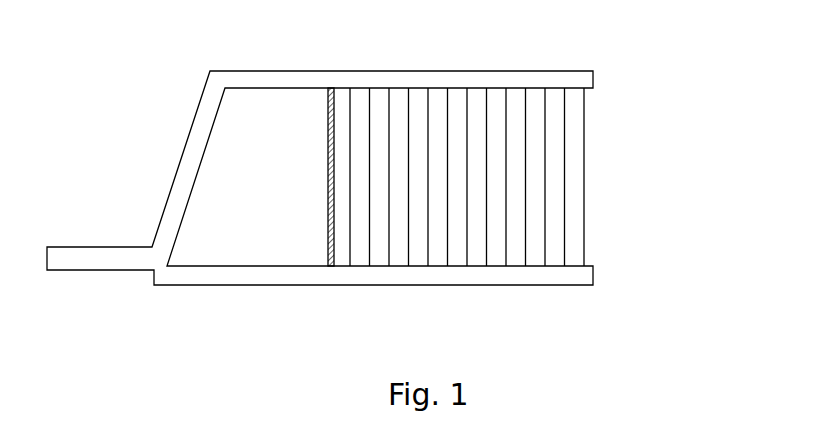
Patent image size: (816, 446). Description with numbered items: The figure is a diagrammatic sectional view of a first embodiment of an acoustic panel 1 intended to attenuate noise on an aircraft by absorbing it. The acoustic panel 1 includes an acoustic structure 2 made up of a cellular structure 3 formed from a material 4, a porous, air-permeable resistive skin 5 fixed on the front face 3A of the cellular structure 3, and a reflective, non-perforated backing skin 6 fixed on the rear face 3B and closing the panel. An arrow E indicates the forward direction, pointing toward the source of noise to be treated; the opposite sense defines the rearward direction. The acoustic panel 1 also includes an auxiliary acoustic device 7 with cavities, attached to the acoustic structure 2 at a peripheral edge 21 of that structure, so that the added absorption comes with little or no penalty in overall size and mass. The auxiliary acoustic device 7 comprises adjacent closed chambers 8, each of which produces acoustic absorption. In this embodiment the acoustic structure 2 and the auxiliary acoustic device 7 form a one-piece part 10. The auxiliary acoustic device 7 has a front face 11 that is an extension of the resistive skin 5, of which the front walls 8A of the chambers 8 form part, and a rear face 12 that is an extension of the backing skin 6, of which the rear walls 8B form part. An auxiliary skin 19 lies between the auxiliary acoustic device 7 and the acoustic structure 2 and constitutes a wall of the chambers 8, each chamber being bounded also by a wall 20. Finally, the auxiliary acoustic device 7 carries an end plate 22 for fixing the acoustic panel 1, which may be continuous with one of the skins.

The acoustic panel 1 is at (104, 90).
The acoustic structure 2 is at (555, 58).
The cellular structure 3 is at (557, 153).
The front face 3A is at (595, 263).
The rear face 3B is at (593, 92).
The material 4 is at (575, 198).
The resistive skin 5 is at (465, 275).
The backing skin 6 is at (468, 79).
The auxiliary acoustic device 7 is at (172, 135).
The chambers 8 is at (219, 213).
The front walls 8A is at (266, 258).
The rear walls 8B is at (285, 99).
The one-piece part 10 is at (272, 288).
The front face 11 is at (215, 281).
The rear face 12 is at (265, 78).
The auxiliary skin 19 is at (336, 133).
The wall 20 is at (168, 198).
The peripheral edge 21 is at (332, 290).
The end plate 22 is at (72, 262).
The arrow E is at (697, 115).